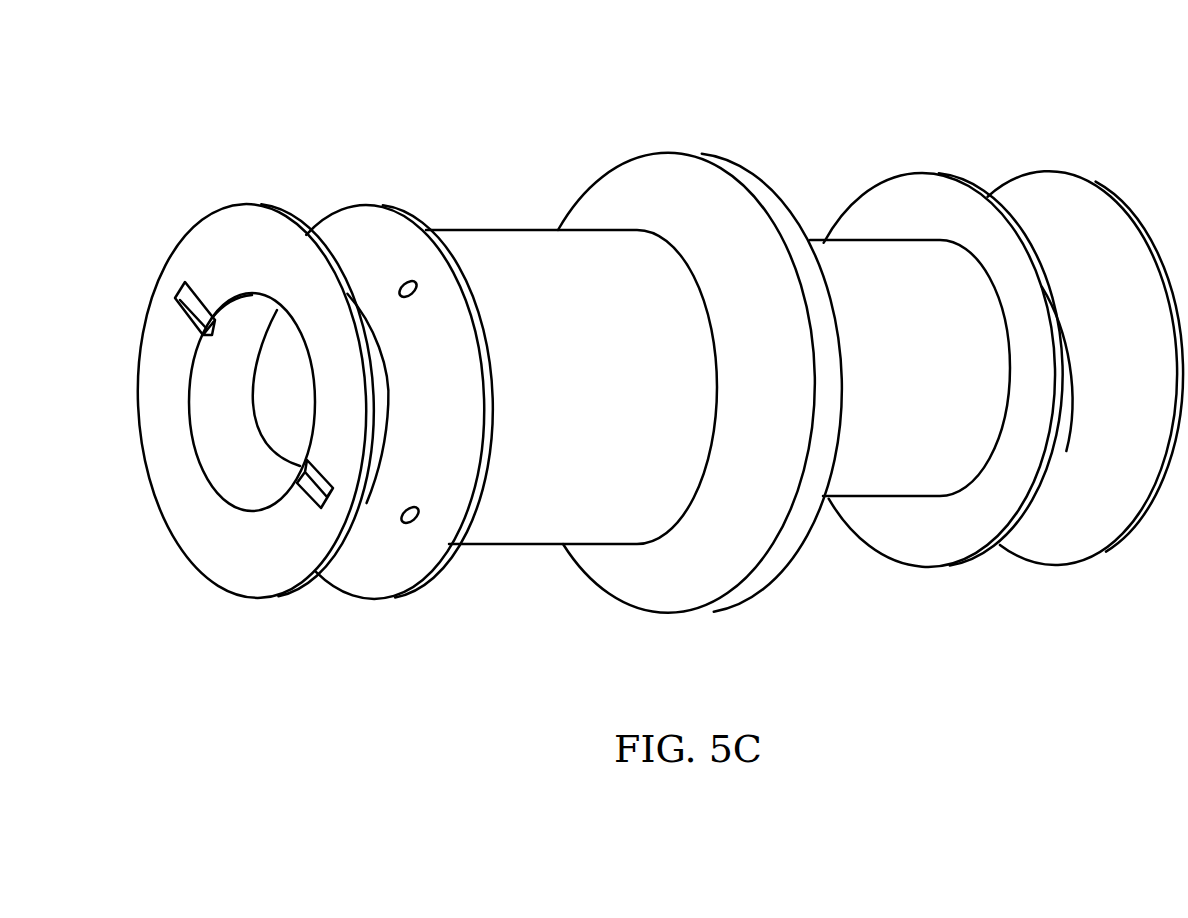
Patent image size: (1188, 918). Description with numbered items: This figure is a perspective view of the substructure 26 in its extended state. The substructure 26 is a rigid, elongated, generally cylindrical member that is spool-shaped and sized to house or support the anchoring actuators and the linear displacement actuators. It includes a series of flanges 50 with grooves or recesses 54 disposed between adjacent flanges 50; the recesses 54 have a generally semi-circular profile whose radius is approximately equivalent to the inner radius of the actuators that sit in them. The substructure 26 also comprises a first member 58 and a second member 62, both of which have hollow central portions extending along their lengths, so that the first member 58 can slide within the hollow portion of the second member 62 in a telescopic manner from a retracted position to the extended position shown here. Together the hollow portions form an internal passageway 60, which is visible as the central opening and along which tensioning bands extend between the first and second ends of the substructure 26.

The substructure 26 is at (181, 67).
The flanges 50 is at (247, 205).
The recesses 54 is at (380, 517).
The first member 58 is at (828, 270).
The internal passageway 60 is at (273, 408).
The second member 62 is at (520, 262).